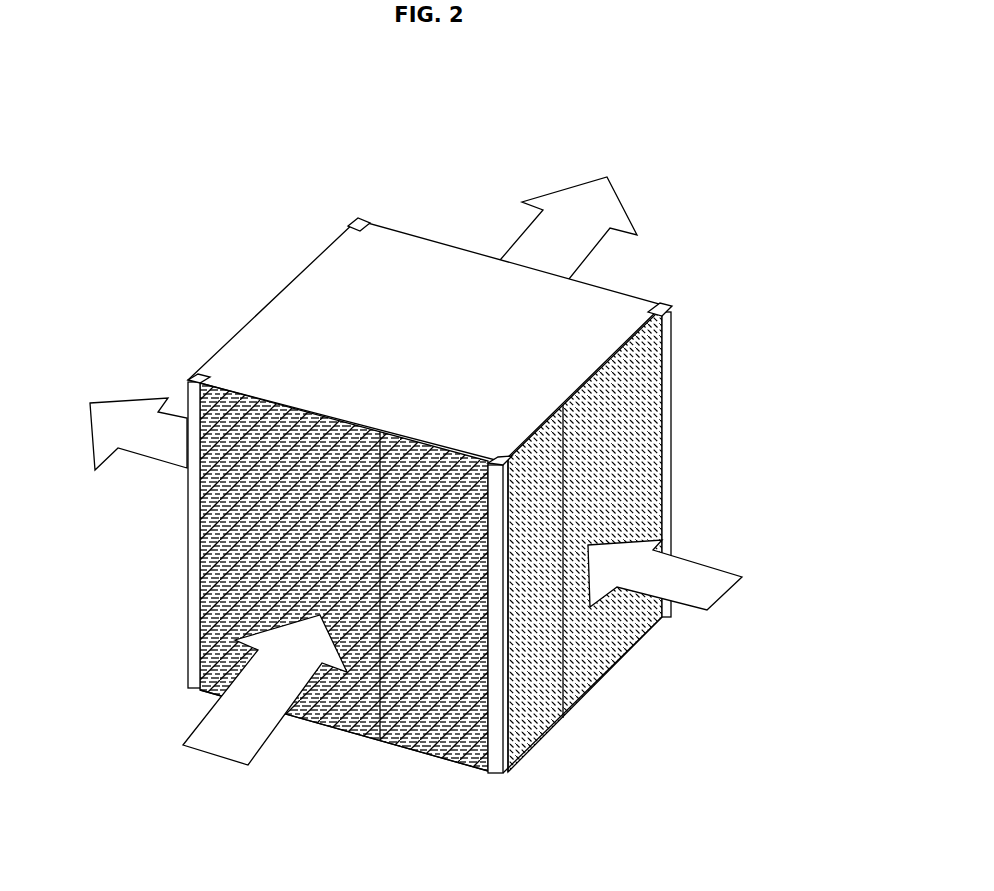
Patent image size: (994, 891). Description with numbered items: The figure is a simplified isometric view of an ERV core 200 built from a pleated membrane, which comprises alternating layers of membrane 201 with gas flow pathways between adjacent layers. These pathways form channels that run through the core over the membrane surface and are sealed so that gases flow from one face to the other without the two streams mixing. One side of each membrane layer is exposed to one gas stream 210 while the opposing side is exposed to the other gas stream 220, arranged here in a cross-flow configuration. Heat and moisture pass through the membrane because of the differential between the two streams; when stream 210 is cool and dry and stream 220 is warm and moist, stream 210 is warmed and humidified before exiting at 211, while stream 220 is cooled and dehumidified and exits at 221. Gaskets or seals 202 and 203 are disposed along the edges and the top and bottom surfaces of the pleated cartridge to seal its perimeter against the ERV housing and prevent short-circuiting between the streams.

The ERV core 200 is at (630, 295).
The membrane 201 is at (240, 523).
The gasket or seal 202 is at (500, 693).
The gasket or seal 203 is at (375, 282).
The gas stream 210 is at (673, 570).
The exit of gas stream 211 is at (135, 418).
The gas stream 220 is at (240, 743).
The exit of gas stream 221 is at (613, 208).